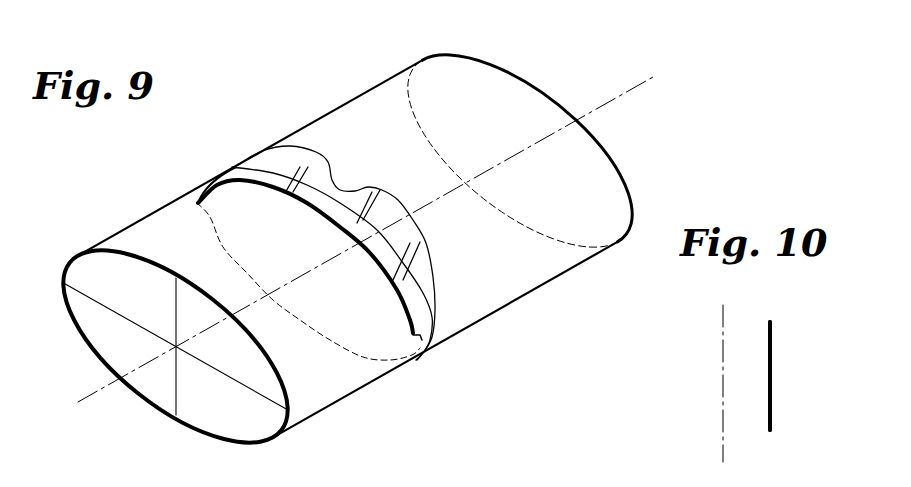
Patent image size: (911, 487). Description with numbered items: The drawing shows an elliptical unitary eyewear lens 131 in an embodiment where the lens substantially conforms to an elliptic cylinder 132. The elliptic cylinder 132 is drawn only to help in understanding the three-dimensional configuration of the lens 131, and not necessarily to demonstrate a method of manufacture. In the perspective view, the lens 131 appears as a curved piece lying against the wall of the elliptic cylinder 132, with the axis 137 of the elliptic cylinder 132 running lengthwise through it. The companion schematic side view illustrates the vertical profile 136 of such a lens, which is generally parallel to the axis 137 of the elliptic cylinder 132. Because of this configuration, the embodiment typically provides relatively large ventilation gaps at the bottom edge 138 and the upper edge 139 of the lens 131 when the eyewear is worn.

In FIG. 9, the lens 131 is at (283, 152).
In FIG. 9, the elliptic cylinder 132 is at (495, 65).
In FIG. 10, the vertical profile 136 is at (772, 363).
In FIG. 9, the axis 137 is at (97, 400).
In FIG. 10, the axis 137 is at (723, 371).
In FIG. 9, the bottom edge 138 is at (427, 260).
In FIG. 10, the bottom edge 138 is at (771, 432).
In FIG. 9, the upper edge 139 is at (377, 268).
In FIG. 10, the upper edge 139 is at (772, 313).